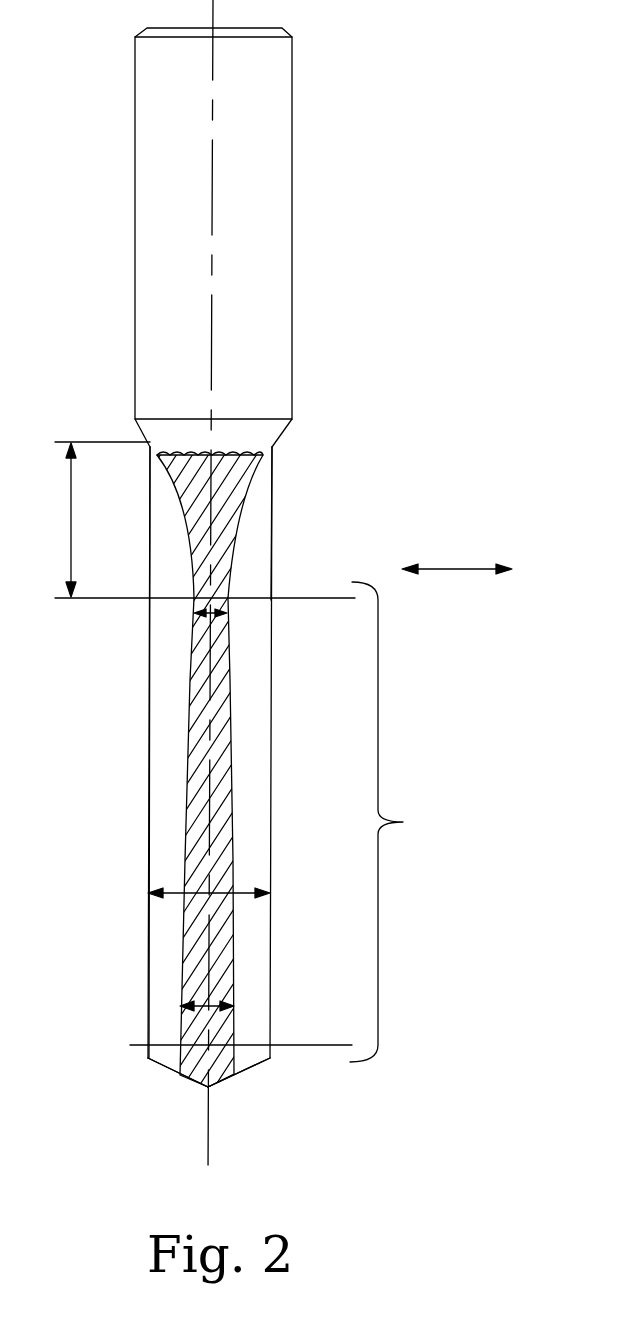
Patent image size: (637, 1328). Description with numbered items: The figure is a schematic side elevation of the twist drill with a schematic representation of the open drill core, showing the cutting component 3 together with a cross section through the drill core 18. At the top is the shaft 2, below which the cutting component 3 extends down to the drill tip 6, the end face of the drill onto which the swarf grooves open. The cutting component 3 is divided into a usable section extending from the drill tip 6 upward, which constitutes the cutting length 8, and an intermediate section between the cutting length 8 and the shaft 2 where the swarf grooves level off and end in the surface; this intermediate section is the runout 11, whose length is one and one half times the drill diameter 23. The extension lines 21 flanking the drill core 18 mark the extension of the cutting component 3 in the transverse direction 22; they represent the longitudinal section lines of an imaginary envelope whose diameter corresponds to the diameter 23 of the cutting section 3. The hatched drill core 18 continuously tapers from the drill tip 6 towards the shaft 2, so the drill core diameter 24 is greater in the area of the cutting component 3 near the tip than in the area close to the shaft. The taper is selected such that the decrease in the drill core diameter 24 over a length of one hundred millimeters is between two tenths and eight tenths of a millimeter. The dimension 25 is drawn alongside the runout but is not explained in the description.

The shaft 2 is at (291, 172).
The cutting component 3 is at (146, 806).
The drill tip 6 is at (210, 1090).
The cutting length 8 is at (405, 822).
The runout 11 is at (272, 515).
The drill core 18 is at (214, 790).
The extension lines 21 is at (148, 718).
The transverse direction 22 is at (447, 568).
The diameter 23 is at (237, 896).
The drill core diameter 24 is at (215, 616).
The transition length 25 is at (72, 508).